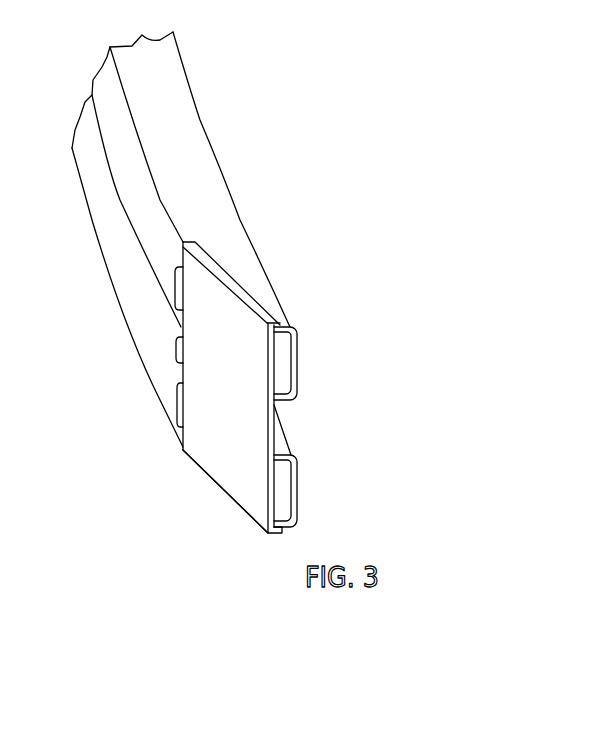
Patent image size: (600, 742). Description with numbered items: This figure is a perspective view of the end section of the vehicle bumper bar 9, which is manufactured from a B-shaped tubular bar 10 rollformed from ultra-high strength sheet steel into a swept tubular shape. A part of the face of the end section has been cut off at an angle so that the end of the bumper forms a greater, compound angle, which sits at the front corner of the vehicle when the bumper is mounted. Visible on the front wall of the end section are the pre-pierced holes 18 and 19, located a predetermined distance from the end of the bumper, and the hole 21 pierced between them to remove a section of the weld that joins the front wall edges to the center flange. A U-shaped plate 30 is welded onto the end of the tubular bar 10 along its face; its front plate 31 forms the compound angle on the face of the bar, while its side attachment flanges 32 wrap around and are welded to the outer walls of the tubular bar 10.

The vehicle bumper bar 9 is at (61, 216).
The tubular bar 10 is at (262, 268).
The hole 18 is at (180, 402).
The hole 19 is at (177, 282).
The hole 21 is at (173, 345).
The U-shaped plate 30 is at (225, 448).
The front plate 31 is at (237, 390).
The side attachment flanges 32 is at (250, 293).